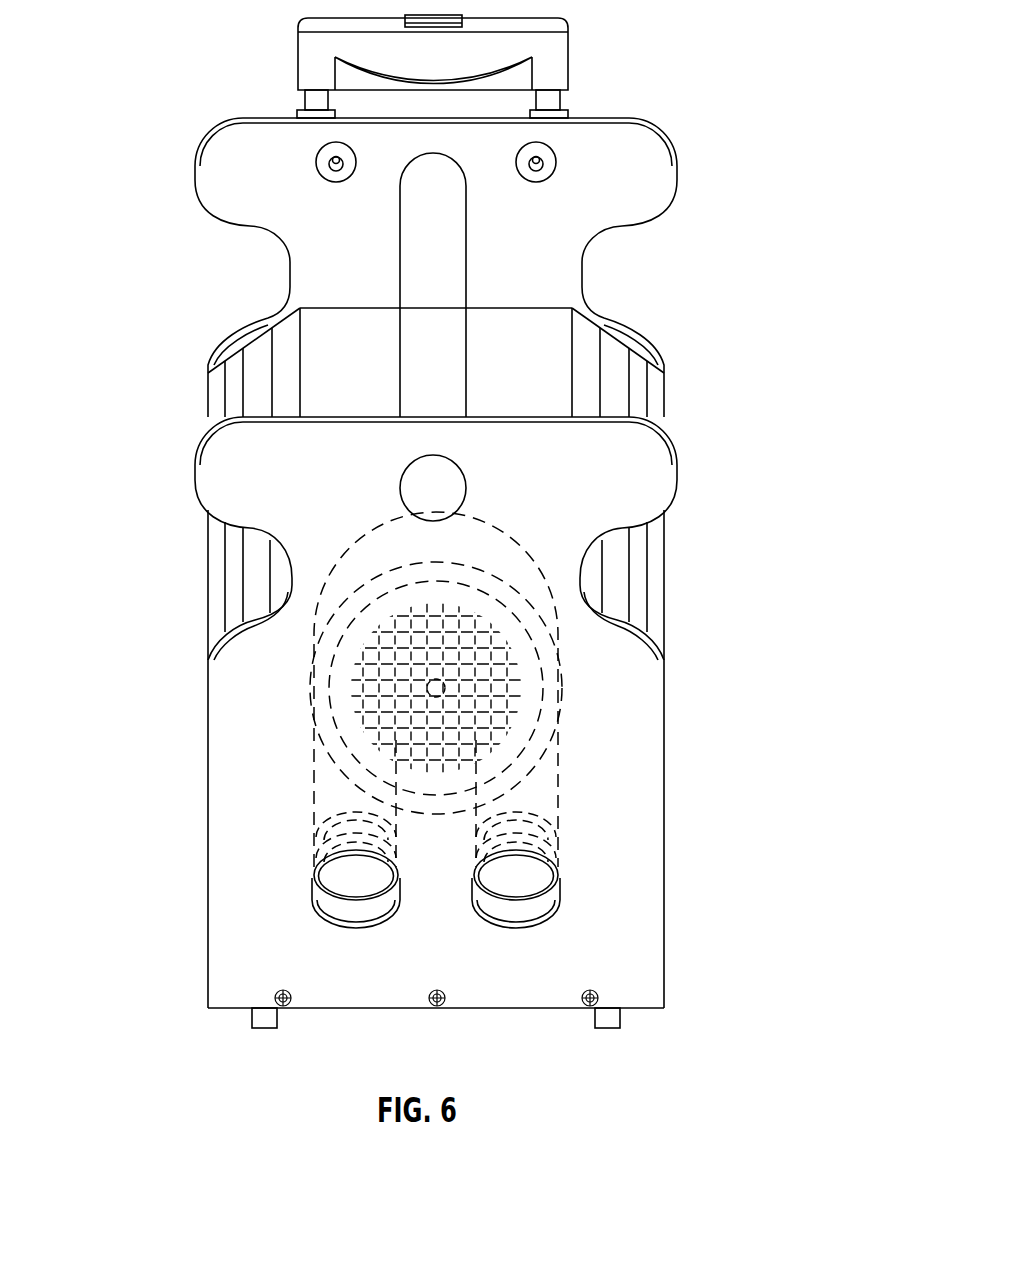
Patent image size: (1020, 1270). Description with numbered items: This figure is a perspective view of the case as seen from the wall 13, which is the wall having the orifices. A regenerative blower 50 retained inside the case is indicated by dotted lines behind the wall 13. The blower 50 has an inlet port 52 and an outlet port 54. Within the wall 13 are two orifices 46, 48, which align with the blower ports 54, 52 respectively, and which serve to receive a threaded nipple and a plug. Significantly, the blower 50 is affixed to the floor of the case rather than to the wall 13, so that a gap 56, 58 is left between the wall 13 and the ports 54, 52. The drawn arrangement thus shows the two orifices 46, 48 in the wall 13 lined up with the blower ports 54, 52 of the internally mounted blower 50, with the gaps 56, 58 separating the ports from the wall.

The wall 13 is at (603, 902).
The orifice 46 is at (387, 898).
The orifice 48 is at (500, 907).
The regenerative blower 50 is at (562, 687).
The inlet port 52 is at (518, 810).
The outlet port 54 is at (358, 810).
The gap 56 is at (360, 822).
The gap 58 is at (520, 831).